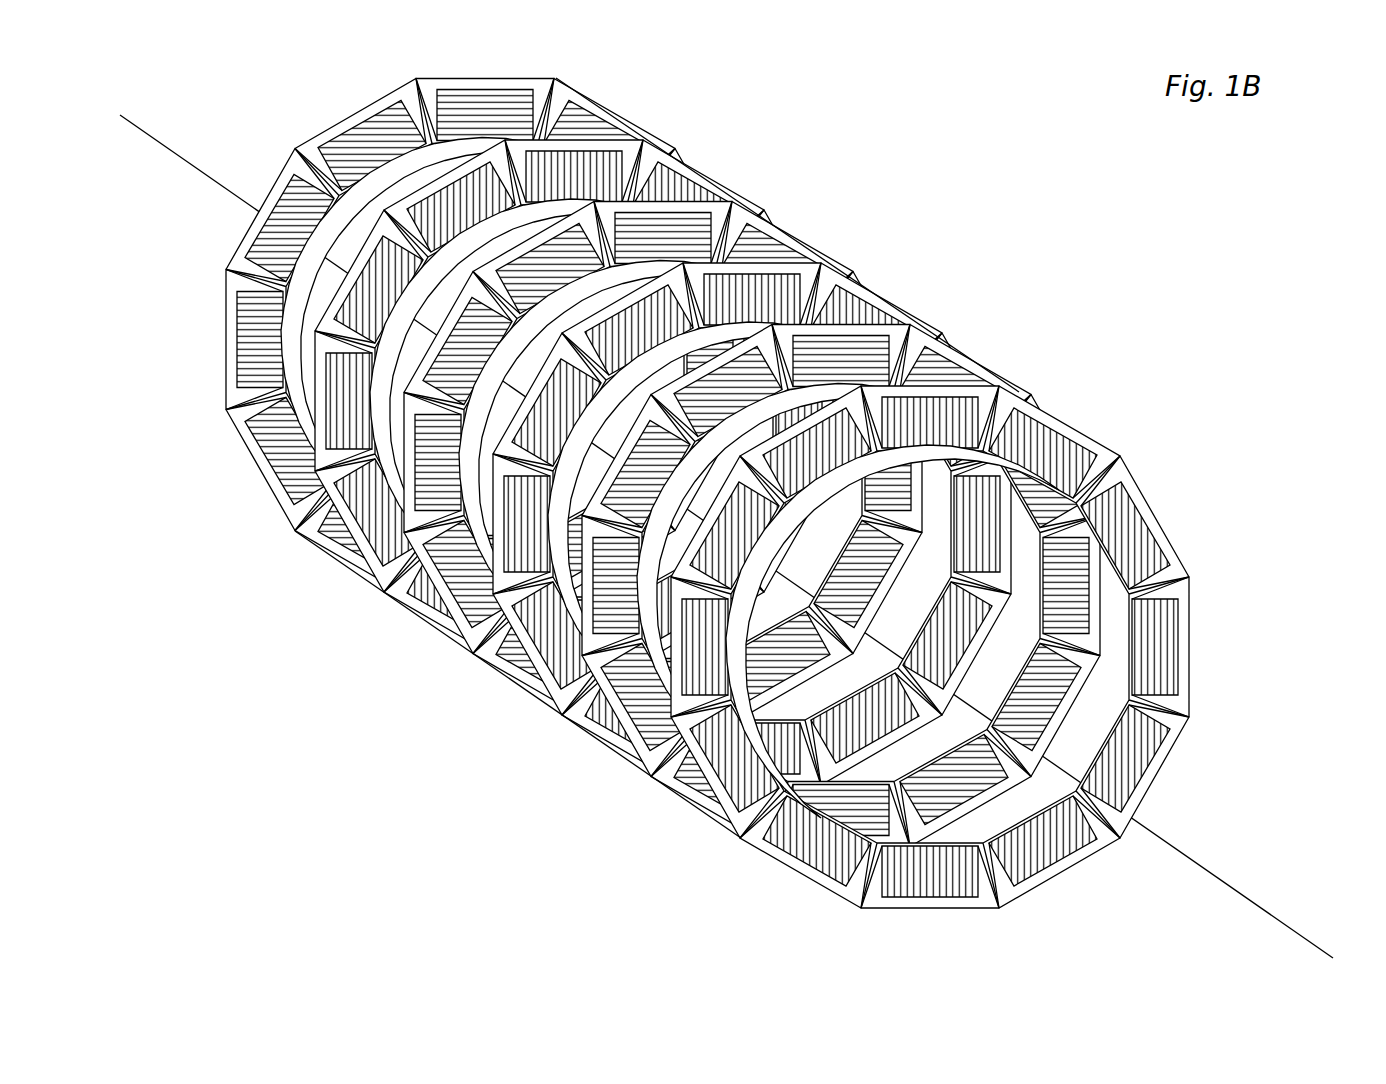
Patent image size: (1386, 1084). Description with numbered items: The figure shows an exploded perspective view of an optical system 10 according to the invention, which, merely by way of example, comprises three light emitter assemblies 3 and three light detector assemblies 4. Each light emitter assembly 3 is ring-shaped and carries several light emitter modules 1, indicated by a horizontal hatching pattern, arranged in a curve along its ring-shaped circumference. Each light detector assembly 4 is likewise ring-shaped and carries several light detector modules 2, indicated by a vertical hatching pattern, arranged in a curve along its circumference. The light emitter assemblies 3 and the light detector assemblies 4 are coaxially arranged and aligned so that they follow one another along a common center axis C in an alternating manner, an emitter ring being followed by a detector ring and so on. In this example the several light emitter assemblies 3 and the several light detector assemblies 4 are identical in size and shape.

The light emitter module 1 is at (490, 103).
The light detector module 2 is at (1040, 855).
The light emitter assembly 3 is at (978, 368).
The light detector assembly 4 is at (792, 875).
The optical system 10 is at (1162, 275).
The common center axis C is at (193, 168).